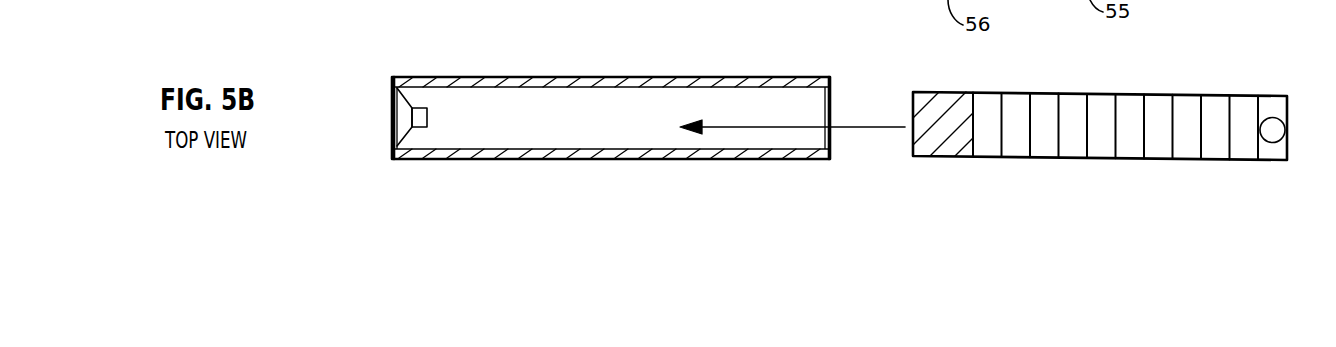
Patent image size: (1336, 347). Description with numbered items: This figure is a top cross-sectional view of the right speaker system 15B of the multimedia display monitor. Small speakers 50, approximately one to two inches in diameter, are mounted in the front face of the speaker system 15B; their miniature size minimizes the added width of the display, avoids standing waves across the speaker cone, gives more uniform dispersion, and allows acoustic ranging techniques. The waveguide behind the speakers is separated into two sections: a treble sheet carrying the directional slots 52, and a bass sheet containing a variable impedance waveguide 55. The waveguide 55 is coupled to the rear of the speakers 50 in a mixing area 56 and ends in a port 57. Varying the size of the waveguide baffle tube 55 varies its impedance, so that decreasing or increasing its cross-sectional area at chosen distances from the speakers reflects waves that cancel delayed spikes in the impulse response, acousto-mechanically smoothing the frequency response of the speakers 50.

The right speaker system 15B is at (618, 176).
The small speaker 50 is at (388, 140).
The directional slots 52 is at (565, 77).
The variable impedance waveguide 55 is at (1098, 142).
The mixing area 56 is at (942, 133).
The port 57 is at (1270, 137).